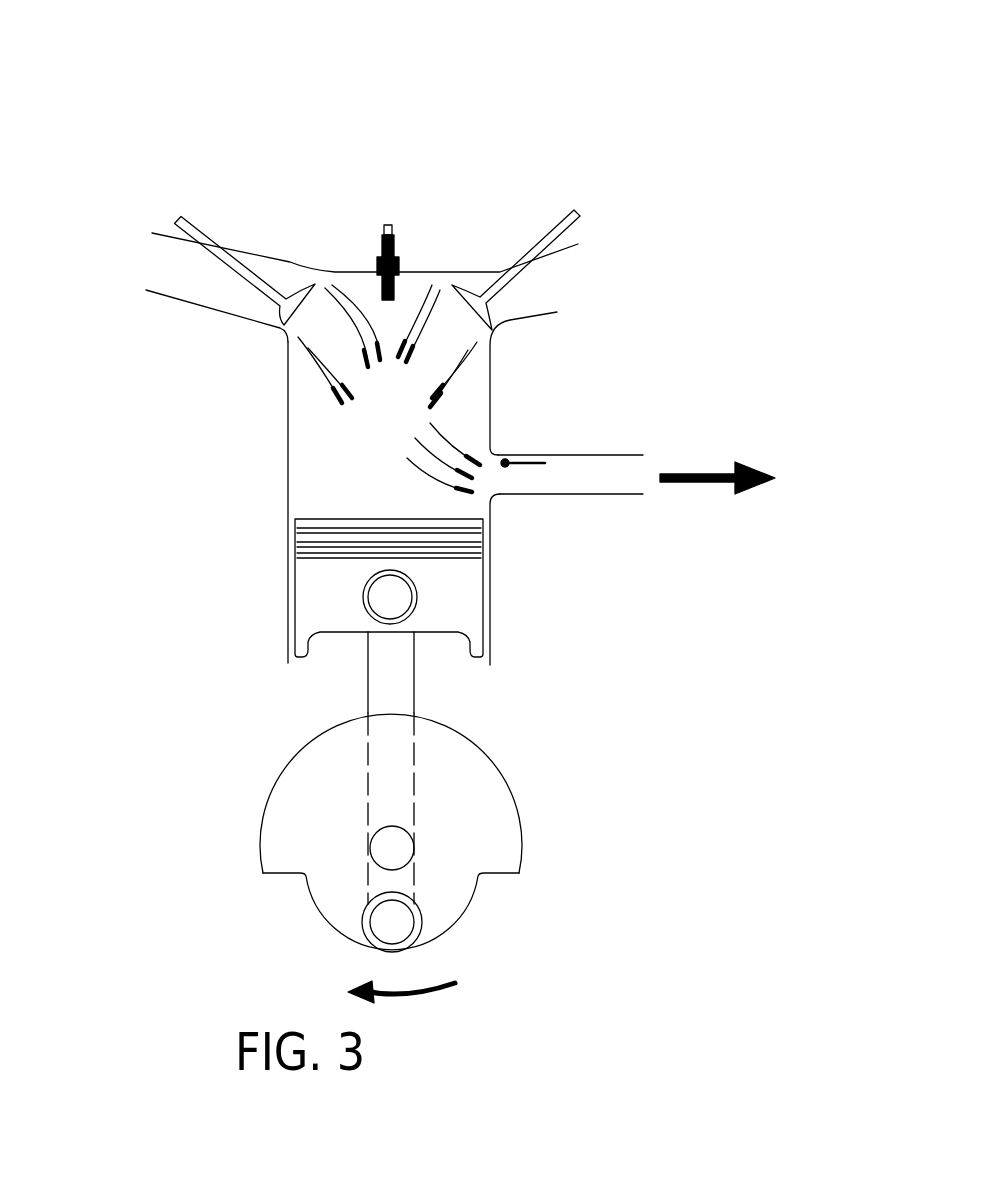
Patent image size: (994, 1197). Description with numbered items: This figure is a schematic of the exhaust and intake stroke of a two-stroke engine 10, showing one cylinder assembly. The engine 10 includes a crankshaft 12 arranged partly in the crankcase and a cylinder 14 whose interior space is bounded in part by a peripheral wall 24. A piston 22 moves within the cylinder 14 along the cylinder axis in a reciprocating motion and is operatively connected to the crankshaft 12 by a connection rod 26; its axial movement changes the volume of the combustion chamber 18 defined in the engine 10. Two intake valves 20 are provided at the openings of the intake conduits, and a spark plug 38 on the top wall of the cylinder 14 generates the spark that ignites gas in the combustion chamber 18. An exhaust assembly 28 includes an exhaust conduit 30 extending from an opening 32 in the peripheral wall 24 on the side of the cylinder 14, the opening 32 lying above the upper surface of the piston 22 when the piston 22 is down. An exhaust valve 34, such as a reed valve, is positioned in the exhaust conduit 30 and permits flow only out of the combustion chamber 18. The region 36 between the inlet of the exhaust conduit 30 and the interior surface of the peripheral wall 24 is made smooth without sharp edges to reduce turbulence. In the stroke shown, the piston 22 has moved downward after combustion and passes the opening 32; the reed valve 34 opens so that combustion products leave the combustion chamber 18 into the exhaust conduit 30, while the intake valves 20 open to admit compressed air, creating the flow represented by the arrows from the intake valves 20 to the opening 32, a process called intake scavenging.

The engine 10 is at (625, 237).
The crankshaft 12 is at (395, 928).
The cylinder 14 is at (290, 498).
The combustion chamber 18 is at (310, 377).
The intake valve 20 is at (565, 220).
The piston 22 is at (328, 594).
The peripheral wall 24 is at (290, 442).
The connection rod 26 is at (390, 682).
The exhaust assembly 28 is at (557, 466).
The exhaust conduit 30 is at (578, 498).
The opening 32 is at (489, 488).
The exhaust valve 34 is at (530, 456).
The region 36 is at (498, 455).
The spark plug 38 is at (392, 230).